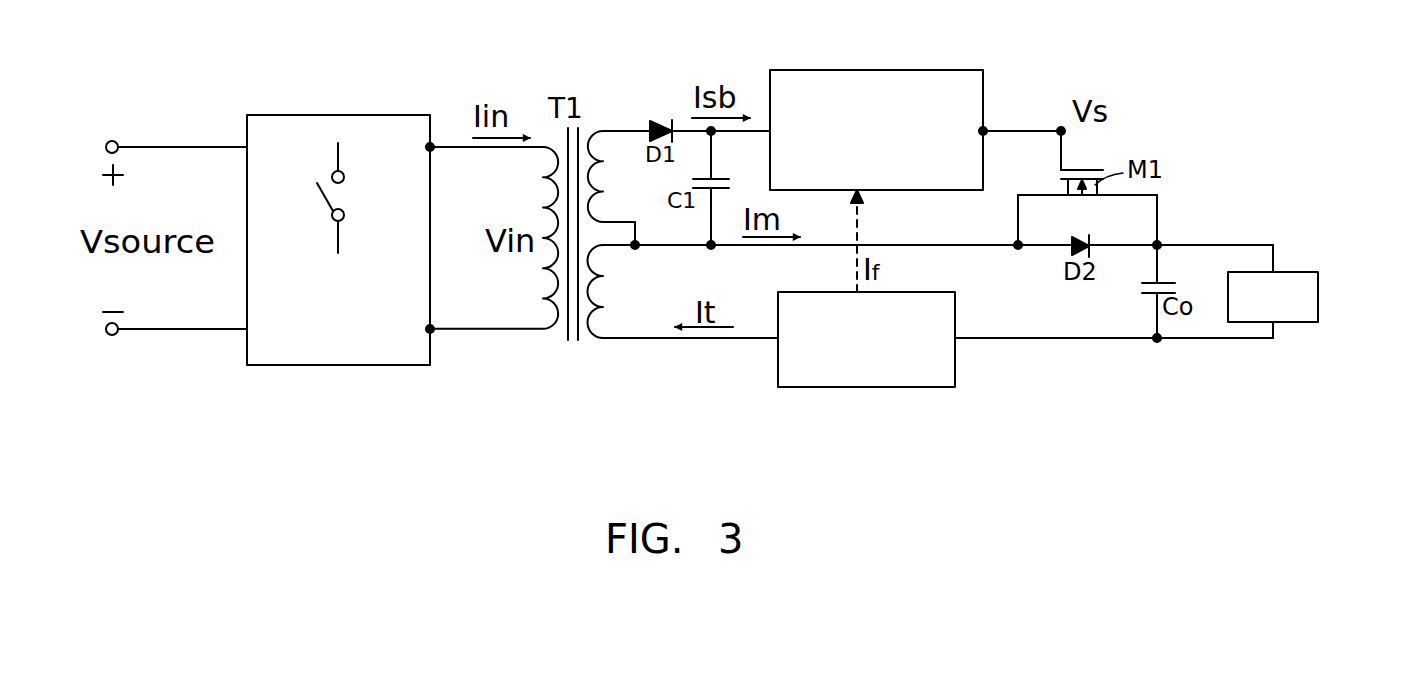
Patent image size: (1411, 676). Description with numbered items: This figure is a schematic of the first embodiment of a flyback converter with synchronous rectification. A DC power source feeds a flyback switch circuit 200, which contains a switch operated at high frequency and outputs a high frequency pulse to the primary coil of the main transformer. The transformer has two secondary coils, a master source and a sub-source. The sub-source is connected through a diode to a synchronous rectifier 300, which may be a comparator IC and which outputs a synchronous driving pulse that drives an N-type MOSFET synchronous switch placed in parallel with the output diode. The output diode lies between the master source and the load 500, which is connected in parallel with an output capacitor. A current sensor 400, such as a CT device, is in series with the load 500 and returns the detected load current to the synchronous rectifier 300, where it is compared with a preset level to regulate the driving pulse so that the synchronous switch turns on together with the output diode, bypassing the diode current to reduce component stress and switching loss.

The flyback switch circuit 200 is at (313, 128).
The synchronous rectifier 300 is at (868, 82).
The current sensor 400 is at (922, 366).
The load 500 is at (1303, 282).